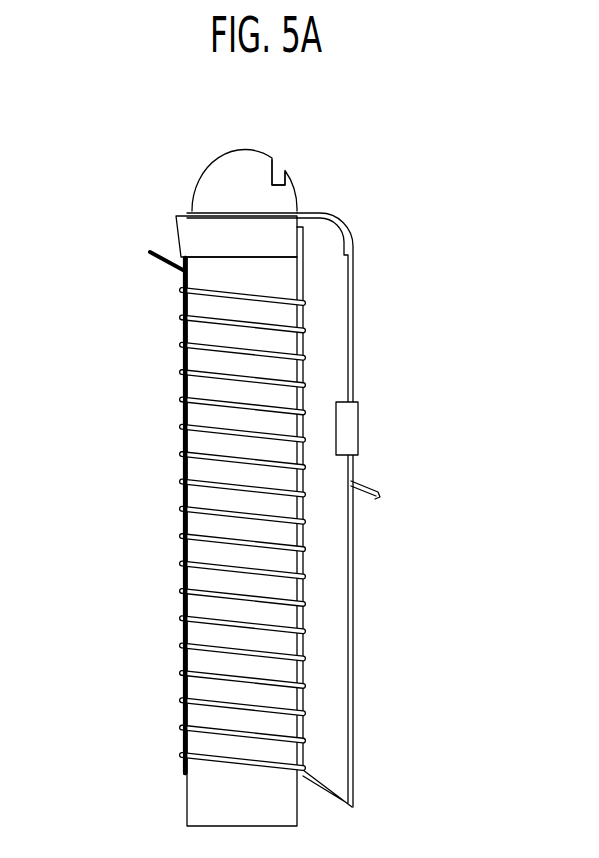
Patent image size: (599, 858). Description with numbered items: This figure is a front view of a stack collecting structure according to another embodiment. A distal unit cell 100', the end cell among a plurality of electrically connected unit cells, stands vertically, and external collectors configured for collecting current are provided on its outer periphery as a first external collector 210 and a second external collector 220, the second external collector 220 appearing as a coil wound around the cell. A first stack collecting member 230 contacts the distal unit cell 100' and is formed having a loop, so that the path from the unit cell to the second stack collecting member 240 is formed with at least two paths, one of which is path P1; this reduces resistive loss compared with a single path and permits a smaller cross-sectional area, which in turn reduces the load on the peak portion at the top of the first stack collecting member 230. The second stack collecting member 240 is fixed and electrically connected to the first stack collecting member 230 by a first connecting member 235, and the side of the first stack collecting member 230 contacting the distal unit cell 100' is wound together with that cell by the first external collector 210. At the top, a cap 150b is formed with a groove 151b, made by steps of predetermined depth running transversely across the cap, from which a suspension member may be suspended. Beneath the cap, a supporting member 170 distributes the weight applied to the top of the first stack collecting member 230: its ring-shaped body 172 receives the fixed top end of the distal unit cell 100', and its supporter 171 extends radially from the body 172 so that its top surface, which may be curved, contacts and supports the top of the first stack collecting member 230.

The cap 150b is at (240, 160).
The groove 151b is at (278, 175).
The supporting member 170 is at (191, 203).
The supporter 171 is at (328, 233).
The body 172 is at (187, 230).
The distal unit cell 100' is at (192, 539).
The second external collector 220 is at (180, 462).
The first stack collecting member 230 is at (353, 347).
The first connecting member 235 is at (359, 415).
The second stack collecting member 240 is at (368, 487).
The first external collector 210 is at (250, 733).
The path P1 is at (342, 222).